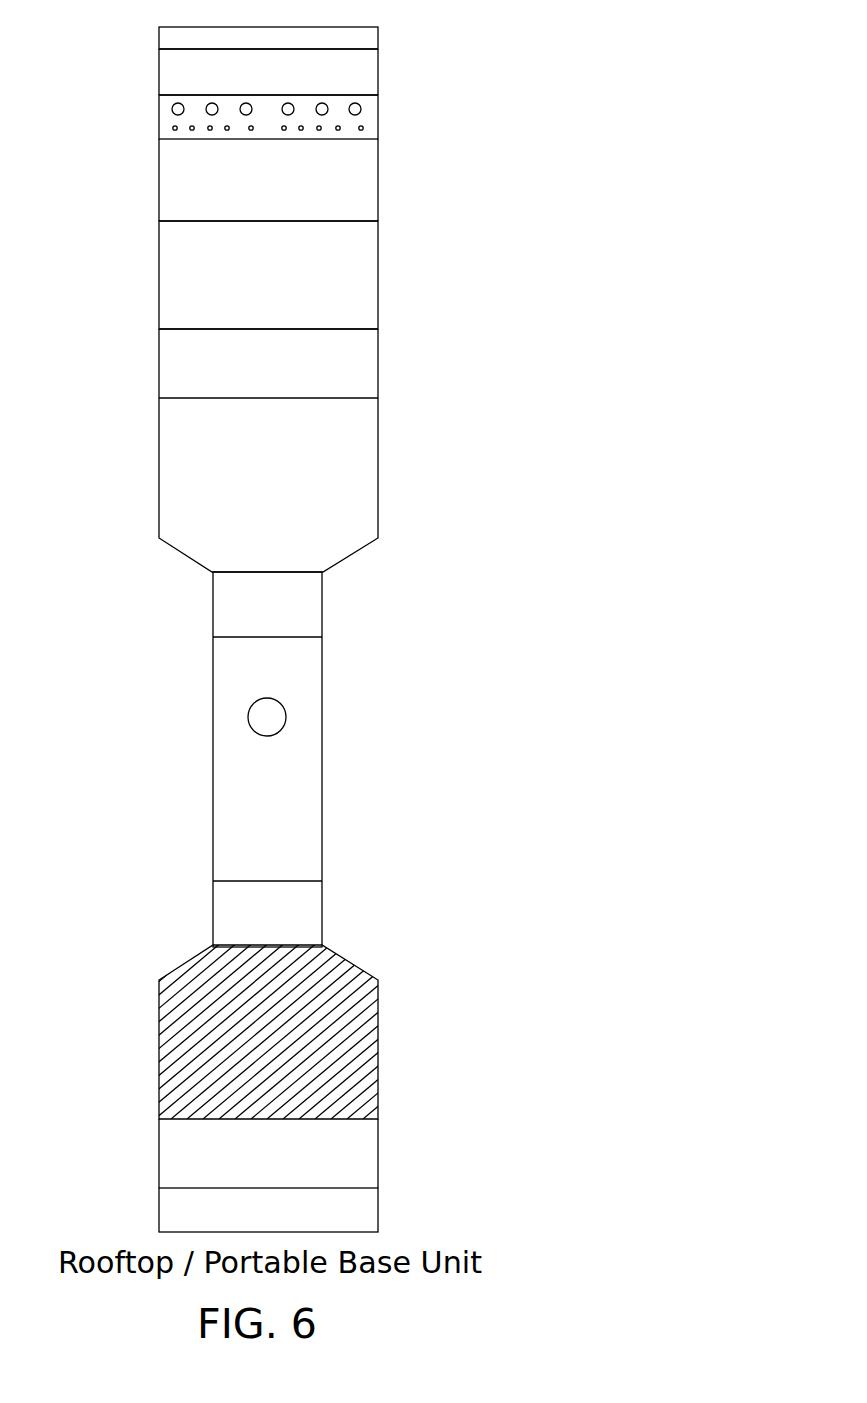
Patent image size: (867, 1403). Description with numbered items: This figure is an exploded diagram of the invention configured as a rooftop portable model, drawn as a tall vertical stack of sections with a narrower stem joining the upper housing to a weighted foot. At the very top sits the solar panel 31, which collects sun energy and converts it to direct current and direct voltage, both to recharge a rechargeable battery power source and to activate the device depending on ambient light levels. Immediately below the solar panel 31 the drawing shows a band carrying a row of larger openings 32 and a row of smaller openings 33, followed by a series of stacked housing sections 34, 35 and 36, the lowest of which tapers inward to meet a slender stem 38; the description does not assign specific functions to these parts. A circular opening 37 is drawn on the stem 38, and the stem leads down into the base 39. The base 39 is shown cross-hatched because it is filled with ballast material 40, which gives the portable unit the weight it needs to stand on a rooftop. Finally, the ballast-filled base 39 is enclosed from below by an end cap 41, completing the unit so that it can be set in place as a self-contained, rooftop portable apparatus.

The solar panel 31 is at (378, 40).
The row of large apertures 32 is at (361, 109).
The row of small apertures 33 is at (364, 128).
The upper housing section 34 is at (378, 139).
The middle housing section 35 is at (378, 258).
The lower tapered housing section 36 is at (378, 435).
The circular port on neck 37 is at (283, 717).
The neck / stem section 38 is at (322, 808).
The base 39 is at (377, 1040).
The ballast material 40 is at (345, 1077).
The end cap 41 is at (378, 1205).